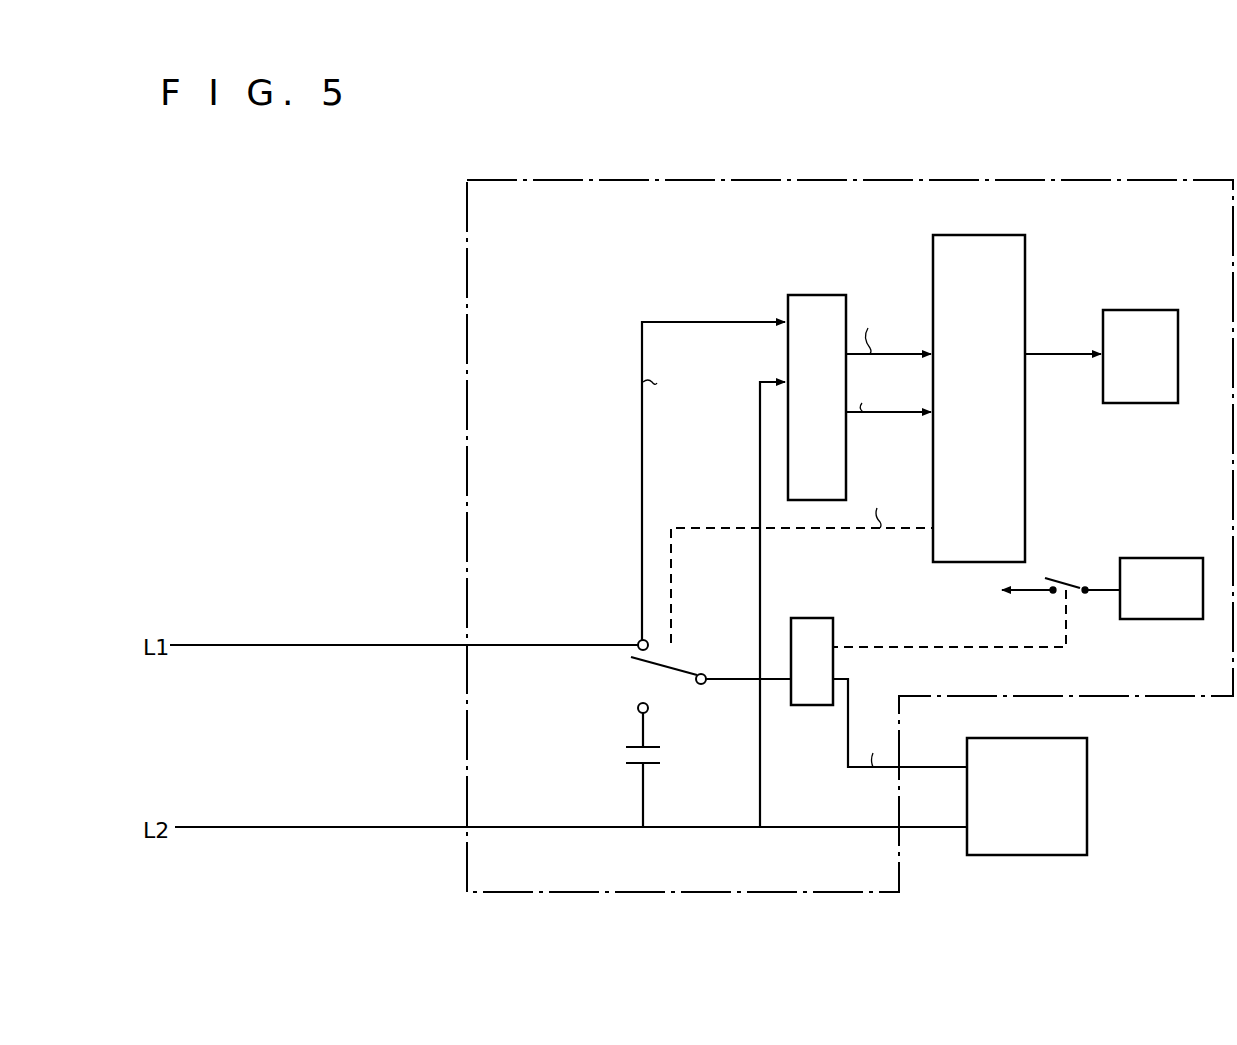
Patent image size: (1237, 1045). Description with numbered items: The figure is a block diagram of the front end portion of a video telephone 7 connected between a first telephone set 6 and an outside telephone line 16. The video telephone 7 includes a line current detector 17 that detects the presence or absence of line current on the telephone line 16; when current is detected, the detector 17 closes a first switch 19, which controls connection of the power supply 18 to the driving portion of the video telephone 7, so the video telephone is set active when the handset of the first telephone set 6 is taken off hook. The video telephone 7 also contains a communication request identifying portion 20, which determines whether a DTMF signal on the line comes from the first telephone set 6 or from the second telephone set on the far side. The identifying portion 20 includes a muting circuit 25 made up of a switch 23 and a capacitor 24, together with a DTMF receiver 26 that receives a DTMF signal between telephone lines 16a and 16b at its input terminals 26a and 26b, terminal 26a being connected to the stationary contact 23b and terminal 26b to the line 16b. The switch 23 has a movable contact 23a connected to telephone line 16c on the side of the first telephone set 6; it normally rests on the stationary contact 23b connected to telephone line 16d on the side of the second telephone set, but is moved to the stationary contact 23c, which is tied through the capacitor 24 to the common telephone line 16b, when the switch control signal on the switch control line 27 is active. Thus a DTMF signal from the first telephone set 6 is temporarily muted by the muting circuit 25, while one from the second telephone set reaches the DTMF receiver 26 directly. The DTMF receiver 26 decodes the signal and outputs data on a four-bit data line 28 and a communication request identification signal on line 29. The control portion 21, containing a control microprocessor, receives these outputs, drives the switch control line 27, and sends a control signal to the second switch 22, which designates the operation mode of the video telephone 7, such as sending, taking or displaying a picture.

The first telephone set 6 is at (1087, 830).
The video telephone 7 is at (1107, 180).
The telephone line 16 is at (848, 732).
The telephone line 16a is at (620, 322).
The common telephone line 16b is at (761, 577).
The telephone line 16c is at (742, 682).
The telephone line 16d is at (530, 622).
The line current detector 17 is at (833, 630).
The power supply 18 is at (1158, 570).
The first switch 19 is at (1062, 582).
The communication request identifying portion 20 is at (601, 446).
The control portion 21 is at (1018, 490).
The second switch 22 is at (1142, 314).
The switch 23 is at (658, 680).
The movable contact 23a is at (682, 676).
The stationary contact 23b is at (639, 640).
The stationary contact 23c is at (637, 715).
The capacitor 24 is at (660, 765).
The muting circuit 25 is at (604, 698).
The DTMF receiver 26 is at (790, 300).
The input terminal 26a is at (788, 327).
The input terminal 26b is at (786, 388).
The switch control line 27 is at (718, 528).
The 4-bit data line 28 is at (905, 352).
The line 29 is at (917, 400).